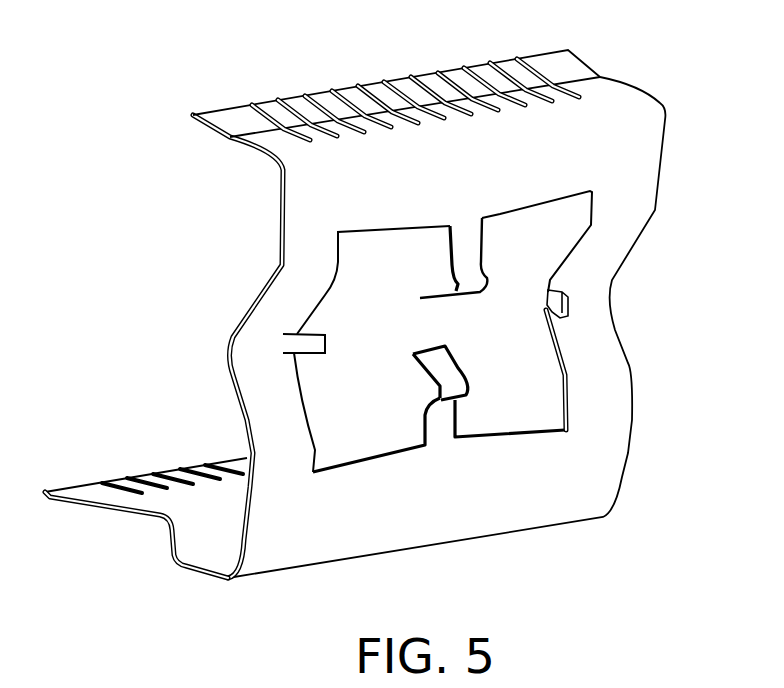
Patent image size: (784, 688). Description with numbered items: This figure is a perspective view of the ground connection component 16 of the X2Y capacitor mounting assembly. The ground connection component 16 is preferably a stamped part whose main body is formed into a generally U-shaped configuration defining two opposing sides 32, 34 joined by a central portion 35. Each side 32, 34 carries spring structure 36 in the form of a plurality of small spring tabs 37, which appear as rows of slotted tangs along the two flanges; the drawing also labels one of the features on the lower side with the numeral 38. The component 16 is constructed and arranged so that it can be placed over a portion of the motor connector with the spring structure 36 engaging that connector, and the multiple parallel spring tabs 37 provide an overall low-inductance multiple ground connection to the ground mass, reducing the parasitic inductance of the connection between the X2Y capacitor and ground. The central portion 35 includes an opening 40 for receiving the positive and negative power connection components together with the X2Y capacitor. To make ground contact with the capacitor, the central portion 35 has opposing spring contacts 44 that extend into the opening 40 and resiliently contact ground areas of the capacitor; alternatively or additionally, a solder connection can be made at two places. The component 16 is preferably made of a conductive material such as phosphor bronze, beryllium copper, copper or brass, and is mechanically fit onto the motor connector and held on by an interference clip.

The ground connection component 16 is at (600, 470).
The side 32 is at (263, 160).
The side 34 is at (142, 520).
The central portion 35 is at (500, 196).
The spring structure 36 is at (399, 87).
The spring tabs 37 is at (510, 60).
The slot of bottom flange 38 is at (157, 470).
The opening 40 is at (533, 400).
The spring contacts 44 is at (422, 297).